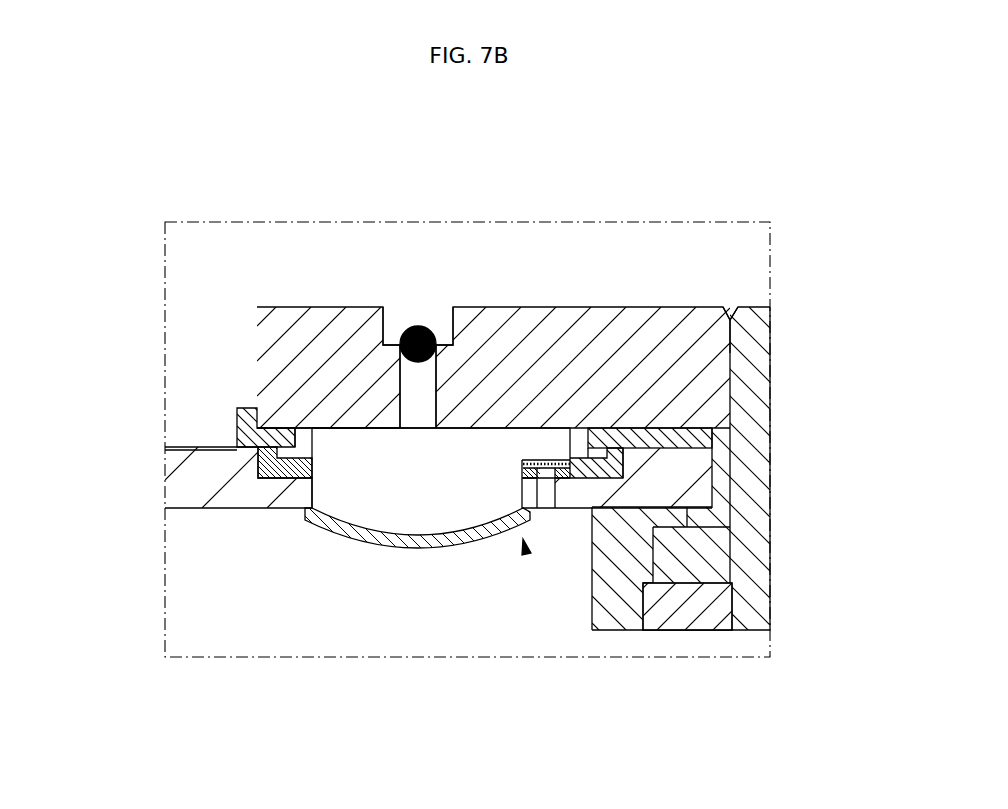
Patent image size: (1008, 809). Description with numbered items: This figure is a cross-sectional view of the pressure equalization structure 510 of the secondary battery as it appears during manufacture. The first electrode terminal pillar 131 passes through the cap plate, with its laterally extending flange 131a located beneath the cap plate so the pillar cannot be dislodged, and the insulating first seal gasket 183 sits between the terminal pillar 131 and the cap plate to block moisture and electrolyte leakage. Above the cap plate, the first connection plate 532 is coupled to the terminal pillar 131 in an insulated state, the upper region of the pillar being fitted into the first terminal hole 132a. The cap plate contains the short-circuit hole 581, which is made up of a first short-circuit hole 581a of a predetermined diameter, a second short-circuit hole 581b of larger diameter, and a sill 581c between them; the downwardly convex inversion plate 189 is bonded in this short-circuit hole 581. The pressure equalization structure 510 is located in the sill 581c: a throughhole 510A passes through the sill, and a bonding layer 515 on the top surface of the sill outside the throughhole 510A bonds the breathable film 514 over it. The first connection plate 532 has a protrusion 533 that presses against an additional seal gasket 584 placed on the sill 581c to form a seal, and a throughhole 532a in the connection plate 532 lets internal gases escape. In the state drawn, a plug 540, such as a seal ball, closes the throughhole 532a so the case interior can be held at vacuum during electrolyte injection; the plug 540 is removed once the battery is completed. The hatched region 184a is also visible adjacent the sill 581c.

The first connection plate 532 is at (277, 353).
The protrusion 533 is at (327, 420).
The plug 540 is at (412, 327).
The throughhole 532a is at (427, 382).
The bonding layer 515 is at (520, 477).
The breathable film 514 is at (522, 463).
The coil 184a is at (598, 445).
The additional seal gasket 584 is at (628, 450).
The first terminal hole 132a is at (732, 354).
The first electrode terminal pillar 131 is at (750, 413).
The first seal gasket 183 is at (705, 489).
The flange 131a is at (693, 562).
The second short-circuit hole 581b is at (240, 428).
The sill 581c is at (262, 480).
The first short-circuit hole 581a is at (318, 480).
The inversion plate 189 is at (447, 492).
The short-circuit hole 581 is at (462, 549).
The pressure equalization structure 510 is at (527, 550).
The throughhole 510A is at (552, 495).